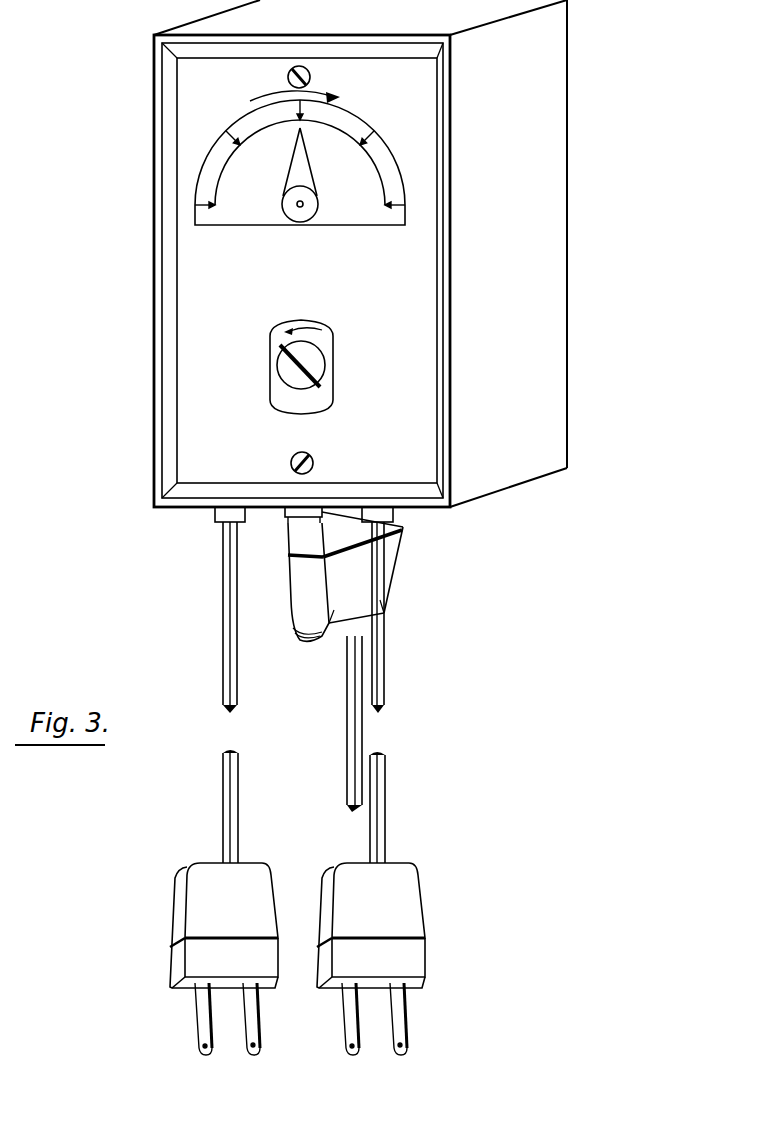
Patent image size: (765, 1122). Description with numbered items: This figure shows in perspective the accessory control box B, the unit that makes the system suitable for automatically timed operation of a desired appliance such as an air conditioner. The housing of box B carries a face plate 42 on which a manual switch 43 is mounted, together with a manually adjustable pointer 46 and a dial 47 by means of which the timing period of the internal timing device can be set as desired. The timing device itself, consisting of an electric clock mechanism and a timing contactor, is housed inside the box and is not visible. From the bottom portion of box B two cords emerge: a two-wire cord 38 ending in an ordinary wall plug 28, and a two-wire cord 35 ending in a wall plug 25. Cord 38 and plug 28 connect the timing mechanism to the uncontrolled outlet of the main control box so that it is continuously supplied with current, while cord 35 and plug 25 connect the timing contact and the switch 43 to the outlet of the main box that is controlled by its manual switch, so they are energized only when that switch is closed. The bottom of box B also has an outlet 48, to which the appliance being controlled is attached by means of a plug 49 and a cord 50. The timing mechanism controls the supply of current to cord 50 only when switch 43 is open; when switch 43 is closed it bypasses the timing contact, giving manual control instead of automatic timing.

The accessory control box B is at (550, 188).
The face plate 42 is at (200, 282).
The switch 43 is at (327, 392).
The manually adjustable pointer 46 is at (297, 150).
The dial 47 is at (360, 130).
The outlet 48 is at (312, 507).
The plug 49 is at (384, 613).
The two-wire cord 38 is at (228, 668).
The two-wire cord 35 is at (380, 693).
The cord 50 is at (353, 777).
The wall plug 28 is at (178, 929).
The wall plug 25 is at (412, 923).